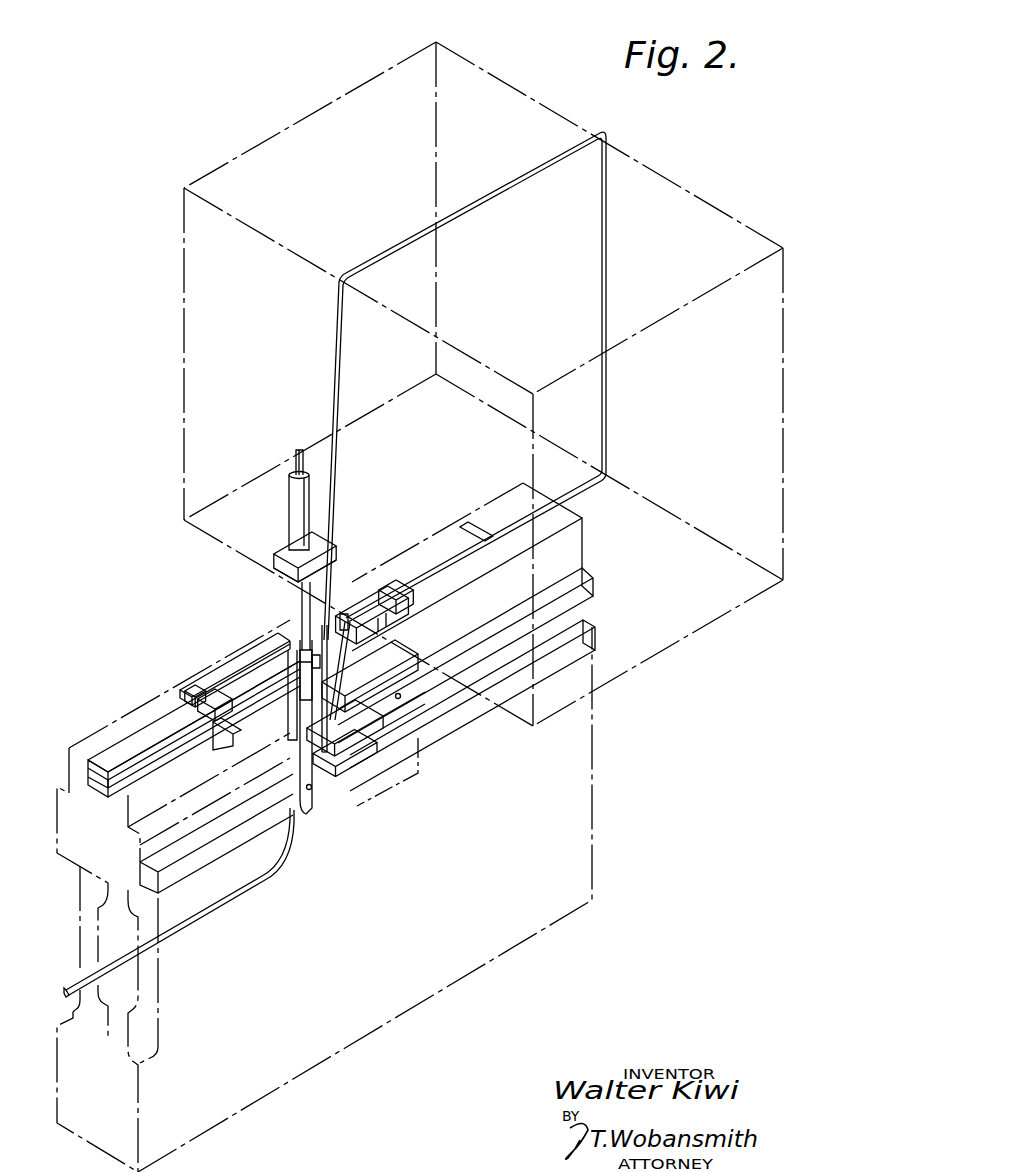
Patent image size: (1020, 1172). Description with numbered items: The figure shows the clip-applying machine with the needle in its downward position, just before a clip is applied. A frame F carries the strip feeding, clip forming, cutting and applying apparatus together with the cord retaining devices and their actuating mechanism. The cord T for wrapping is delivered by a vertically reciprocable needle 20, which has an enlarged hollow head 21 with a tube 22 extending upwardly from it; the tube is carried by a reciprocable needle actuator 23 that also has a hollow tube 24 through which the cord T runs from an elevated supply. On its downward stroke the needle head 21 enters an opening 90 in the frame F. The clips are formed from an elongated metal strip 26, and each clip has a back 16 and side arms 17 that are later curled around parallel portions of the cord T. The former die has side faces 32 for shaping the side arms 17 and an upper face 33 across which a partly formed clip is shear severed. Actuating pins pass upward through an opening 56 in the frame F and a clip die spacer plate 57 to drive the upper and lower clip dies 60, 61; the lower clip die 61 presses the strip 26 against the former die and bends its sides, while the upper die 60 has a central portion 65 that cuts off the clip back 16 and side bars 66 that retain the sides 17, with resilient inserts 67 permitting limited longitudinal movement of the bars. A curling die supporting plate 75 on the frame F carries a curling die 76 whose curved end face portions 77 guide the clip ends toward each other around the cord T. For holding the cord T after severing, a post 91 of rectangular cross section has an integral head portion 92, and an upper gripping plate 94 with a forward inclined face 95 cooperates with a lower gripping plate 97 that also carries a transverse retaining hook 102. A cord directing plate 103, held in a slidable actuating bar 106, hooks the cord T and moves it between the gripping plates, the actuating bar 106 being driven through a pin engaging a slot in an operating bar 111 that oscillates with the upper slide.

The twine or cord T is at (608, 303).
The frame F is at (76, 924).
The back 16 is at (300, 670).
The side arms 17 is at (300, 652).
The needle 20 is at (278, 575).
The needle head 21 is at (310, 805).
The tube 22 is at (302, 600).
The needle actuator 23 is at (280, 558).
The hollow tube 24 is at (297, 505).
The metal strip 26 is at (230, 900).
The side faces 32 is at (338, 680).
The upper face 33 is at (338, 664).
The opening 56 is at (195, 756).
The clip die spacer plate 57 is at (143, 776).
The upper clip die 60 is at (168, 720).
The lower clip die 61 is at (152, 760).
The central portion 65 is at (262, 662).
The side bars 66 is at (215, 692).
The resilient inserts 67 is at (190, 688).
The curling die supporting plate 75 is at (408, 628).
The curling die 76 is at (385, 594).
The curved end face portions 77 is at (350, 600).
The opening 90 is at (312, 660).
The post 91 is at (326, 756).
The head portion 92 is at (382, 683).
The upper gripping plate 94 is at (410, 688).
The forward inclined face 95 is at (350, 748).
The lower gripping plate 97 is at (288, 740).
The retaining hook 102 is at (350, 714).
The cord directing plate 103 is at (424, 720).
The actuating bar 106 is at (508, 636).
The operating bar 111 is at (568, 640).